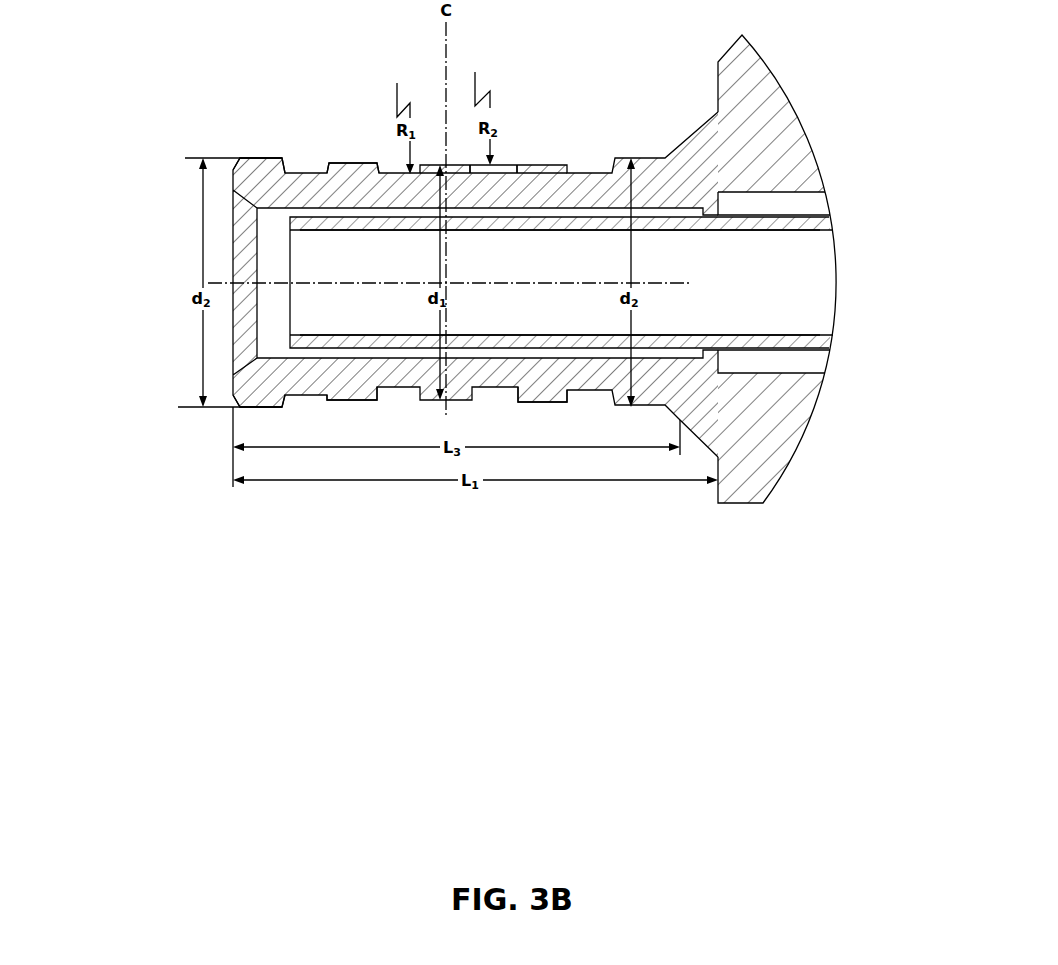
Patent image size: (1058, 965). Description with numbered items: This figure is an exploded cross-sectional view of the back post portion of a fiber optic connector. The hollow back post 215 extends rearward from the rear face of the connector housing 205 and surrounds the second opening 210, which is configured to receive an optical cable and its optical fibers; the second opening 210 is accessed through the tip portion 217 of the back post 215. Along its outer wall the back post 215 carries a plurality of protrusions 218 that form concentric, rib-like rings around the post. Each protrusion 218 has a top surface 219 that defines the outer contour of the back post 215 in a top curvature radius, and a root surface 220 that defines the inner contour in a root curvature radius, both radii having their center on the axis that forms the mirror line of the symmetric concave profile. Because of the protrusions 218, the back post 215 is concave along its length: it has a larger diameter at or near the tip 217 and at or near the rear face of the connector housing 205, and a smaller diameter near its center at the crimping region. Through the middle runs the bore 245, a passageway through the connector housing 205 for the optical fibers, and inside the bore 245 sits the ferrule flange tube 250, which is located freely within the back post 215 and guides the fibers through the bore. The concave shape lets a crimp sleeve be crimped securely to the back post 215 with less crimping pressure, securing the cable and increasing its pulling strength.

The connector housing 205 is at (770, 93).
The second opening 210 is at (178, 278).
The back post 215 is at (528, 378).
The tip portion 217 is at (240, 380).
The protrusions 218 is at (527, 165).
The top surface 219 is at (337, 163).
The root surface 220 is at (293, 173).
The bore 245 is at (517, 272).
The ferrule flange tube 250 is at (408, 217).